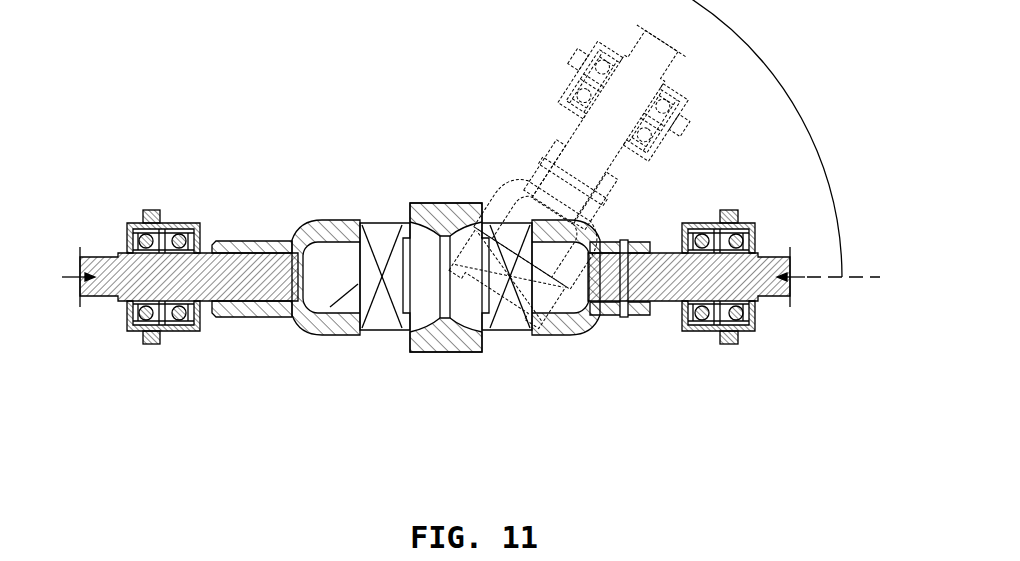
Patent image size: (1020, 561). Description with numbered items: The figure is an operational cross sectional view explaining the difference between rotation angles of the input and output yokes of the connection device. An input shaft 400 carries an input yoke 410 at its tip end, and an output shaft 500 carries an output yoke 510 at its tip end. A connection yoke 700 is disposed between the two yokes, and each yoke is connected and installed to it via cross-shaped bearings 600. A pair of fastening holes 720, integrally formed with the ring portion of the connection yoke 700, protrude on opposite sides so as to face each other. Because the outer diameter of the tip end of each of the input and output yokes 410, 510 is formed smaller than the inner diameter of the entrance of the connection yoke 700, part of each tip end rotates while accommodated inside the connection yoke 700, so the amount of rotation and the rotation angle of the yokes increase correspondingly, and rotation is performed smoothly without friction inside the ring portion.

The input shaft 400 is at (93, 302).
The input yoke 410 is at (251, 328).
The output shaft 500 is at (780, 311).
The output yoke 510 is at (638, 332).
The cross-shaped bearings 600 is at (388, 332).
The connection yoke 700 is at (445, 365).
The fastening holes 720 is at (330, 333).